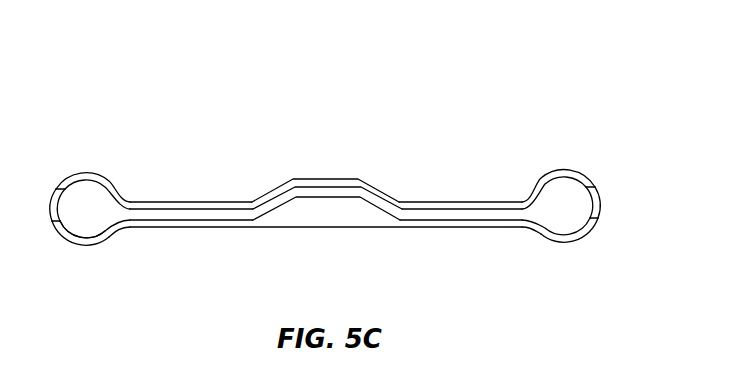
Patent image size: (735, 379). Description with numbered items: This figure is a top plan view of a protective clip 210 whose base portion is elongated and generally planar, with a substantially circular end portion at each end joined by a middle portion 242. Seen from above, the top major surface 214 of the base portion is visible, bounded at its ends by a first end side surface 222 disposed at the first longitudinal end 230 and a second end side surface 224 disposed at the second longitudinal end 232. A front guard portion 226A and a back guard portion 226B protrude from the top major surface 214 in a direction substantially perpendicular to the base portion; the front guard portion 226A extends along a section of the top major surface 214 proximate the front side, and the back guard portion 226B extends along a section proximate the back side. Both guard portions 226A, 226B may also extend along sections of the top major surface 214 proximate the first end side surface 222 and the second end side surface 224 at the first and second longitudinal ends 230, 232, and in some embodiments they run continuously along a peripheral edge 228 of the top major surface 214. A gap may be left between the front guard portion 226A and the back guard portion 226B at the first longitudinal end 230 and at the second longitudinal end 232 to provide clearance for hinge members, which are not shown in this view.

The protective clip 210 is at (175, 86).
The top major surface 214 is at (575, 200).
The first end side surface 222 is at (50, 200).
The second end side surface 224 is at (603, 201).
The front guard portion 226A is at (222, 202).
The back guard portion 226B is at (210, 228).
The peripheral edge 228 is at (473, 201).
The first longitudinal end 230 is at (51, 236).
The second longitudinal end 232 is at (604, 229).
The middle portion 242 is at (323, 178).